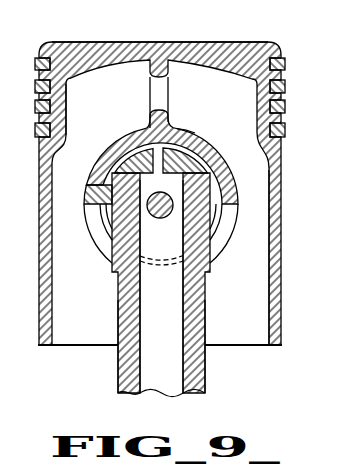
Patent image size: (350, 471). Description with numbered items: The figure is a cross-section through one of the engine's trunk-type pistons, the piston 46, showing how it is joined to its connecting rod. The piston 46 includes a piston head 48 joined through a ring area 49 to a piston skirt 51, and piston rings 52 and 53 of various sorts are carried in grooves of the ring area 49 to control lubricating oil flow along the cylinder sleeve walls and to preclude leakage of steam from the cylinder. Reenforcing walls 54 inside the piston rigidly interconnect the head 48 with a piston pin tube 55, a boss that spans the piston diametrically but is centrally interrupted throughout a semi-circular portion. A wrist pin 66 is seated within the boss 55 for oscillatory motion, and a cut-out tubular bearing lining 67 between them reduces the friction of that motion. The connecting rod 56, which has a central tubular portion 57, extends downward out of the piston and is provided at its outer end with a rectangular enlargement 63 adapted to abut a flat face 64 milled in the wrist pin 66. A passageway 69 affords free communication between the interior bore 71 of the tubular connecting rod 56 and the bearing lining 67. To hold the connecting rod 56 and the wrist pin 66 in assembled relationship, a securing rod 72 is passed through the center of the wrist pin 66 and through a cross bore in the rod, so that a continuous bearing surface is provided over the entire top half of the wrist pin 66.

The piston 46 is at (284, 290).
The piston head 48 is at (215, 43).
The ring area 49 is at (66, 112).
The piston skirt 51 is at (283, 243).
The piston rings 52 is at (286, 87).
The piston rings 53 is at (286, 124).
The reenforcing walls 54 is at (168, 118).
The piston pin tube 55 is at (205, 150).
The connecting rod 56 is at (232, 328).
The central tubular portion 57 is at (206, 376).
The rectangular enlargement 63 is at (200, 266).
The flat face 64 is at (214, 220).
The wrist pin 66 is at (135, 163).
The tubular bearing lining 67 is at (224, 160).
The passageway 69 is at (181, 134).
The interior bore 71 is at (172, 300).
The securing rod 72 is at (147, 207).